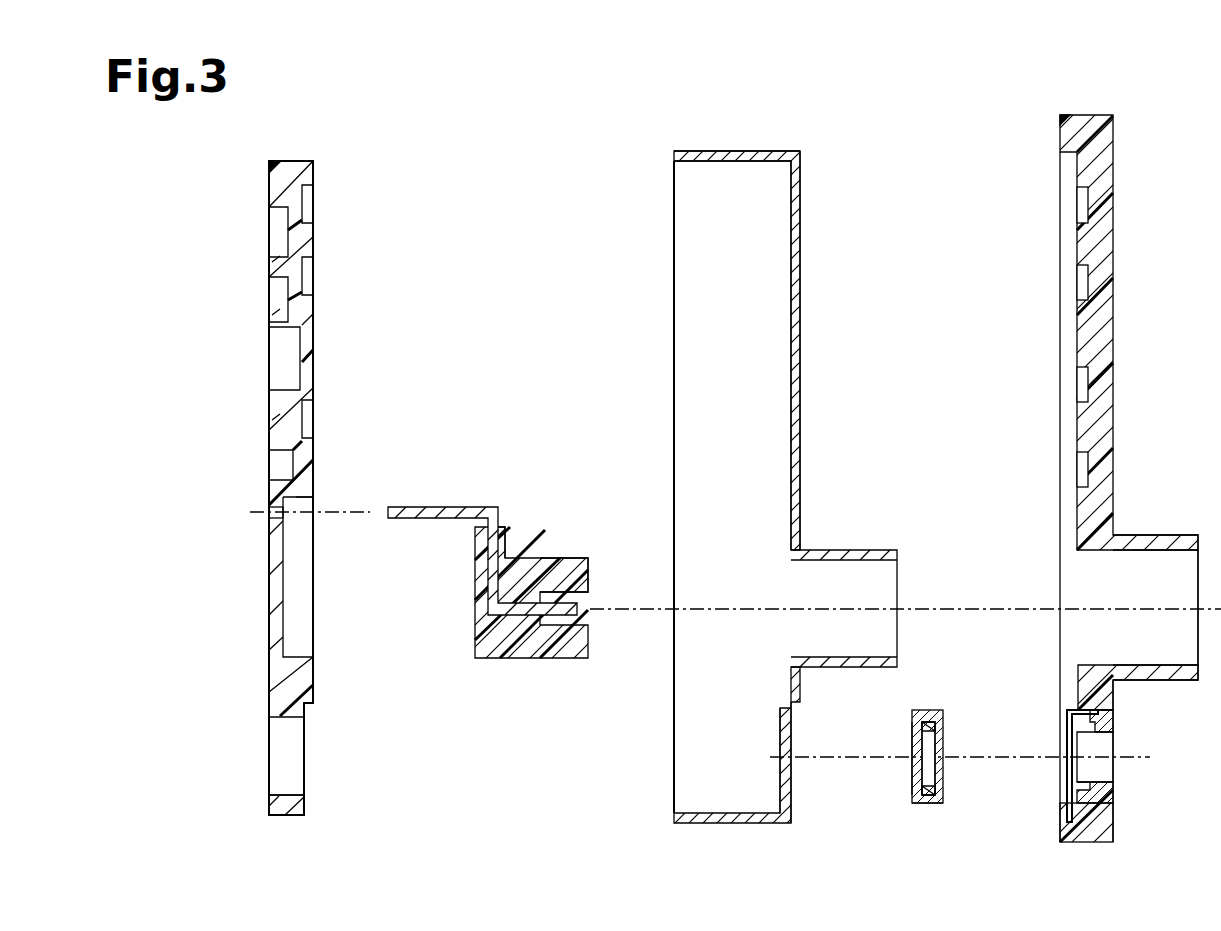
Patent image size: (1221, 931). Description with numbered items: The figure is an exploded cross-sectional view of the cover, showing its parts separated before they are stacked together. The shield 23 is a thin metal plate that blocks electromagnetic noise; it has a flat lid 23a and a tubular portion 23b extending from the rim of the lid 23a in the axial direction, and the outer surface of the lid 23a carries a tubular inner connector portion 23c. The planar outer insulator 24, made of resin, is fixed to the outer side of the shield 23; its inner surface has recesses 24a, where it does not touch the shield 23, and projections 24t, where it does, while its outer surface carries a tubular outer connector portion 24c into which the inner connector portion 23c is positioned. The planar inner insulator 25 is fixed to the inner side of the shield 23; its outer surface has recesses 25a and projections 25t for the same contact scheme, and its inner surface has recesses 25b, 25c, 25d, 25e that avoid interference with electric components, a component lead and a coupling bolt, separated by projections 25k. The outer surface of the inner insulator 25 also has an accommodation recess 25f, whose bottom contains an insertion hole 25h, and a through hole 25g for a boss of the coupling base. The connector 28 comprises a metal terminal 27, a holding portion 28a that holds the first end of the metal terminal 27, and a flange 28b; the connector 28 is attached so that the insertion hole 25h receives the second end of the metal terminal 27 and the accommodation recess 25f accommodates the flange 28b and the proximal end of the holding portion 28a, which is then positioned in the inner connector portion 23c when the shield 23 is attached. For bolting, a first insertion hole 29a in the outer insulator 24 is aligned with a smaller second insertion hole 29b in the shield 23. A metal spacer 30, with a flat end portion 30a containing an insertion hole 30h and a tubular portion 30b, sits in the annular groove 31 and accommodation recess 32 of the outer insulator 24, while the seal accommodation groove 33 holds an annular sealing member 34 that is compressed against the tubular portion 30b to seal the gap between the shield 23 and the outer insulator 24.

The shield 23 is at (798, 152).
The lid 23a is at (796, 292).
The tubular portion 23b is at (737, 158).
The inner connector portion 23c is at (872, 552).
The outer insulator 24 is at (1082, 128).
The recesses 24a is at (1080, 200).
The projections 24t is at (1082, 160).
The outer connector portion 24c is at (1168, 545).
The inner insulator 25 is at (295, 168).
The recesses 25a is at (313, 198).
The recess 25b is at (284, 288).
The recess 25c is at (284, 335).
The recess 25d is at (284, 460).
The recess 25e is at (284, 214).
The accommodation recess 25f is at (313, 505).
The through hole 25g is at (282, 800).
The insertion hole 25h is at (276, 510).
The projections 25k is at (275, 265).
The projections 25t is at (313, 170).
The metal terminal 27 is at (518, 612).
The connector 28 is at (575, 658).
The holding portion 28a is at (570, 566).
The flange 28b is at (503, 543).
The first insertion hole 29a is at (1112, 738).
The second insertion hole 29b is at (792, 752).
The spacer 30 is at (932, 710).
The end portion 30a is at (916, 772).
The tubular portion 30b is at (936, 803).
The insertion hole 30h is at (930, 764).
The annular groove 31 is at (1102, 718).
The accommodation recess 32 is at (1067, 714).
The seal accommodation groove 33 is at (1097, 798).
The sealing member 34 is at (932, 727).